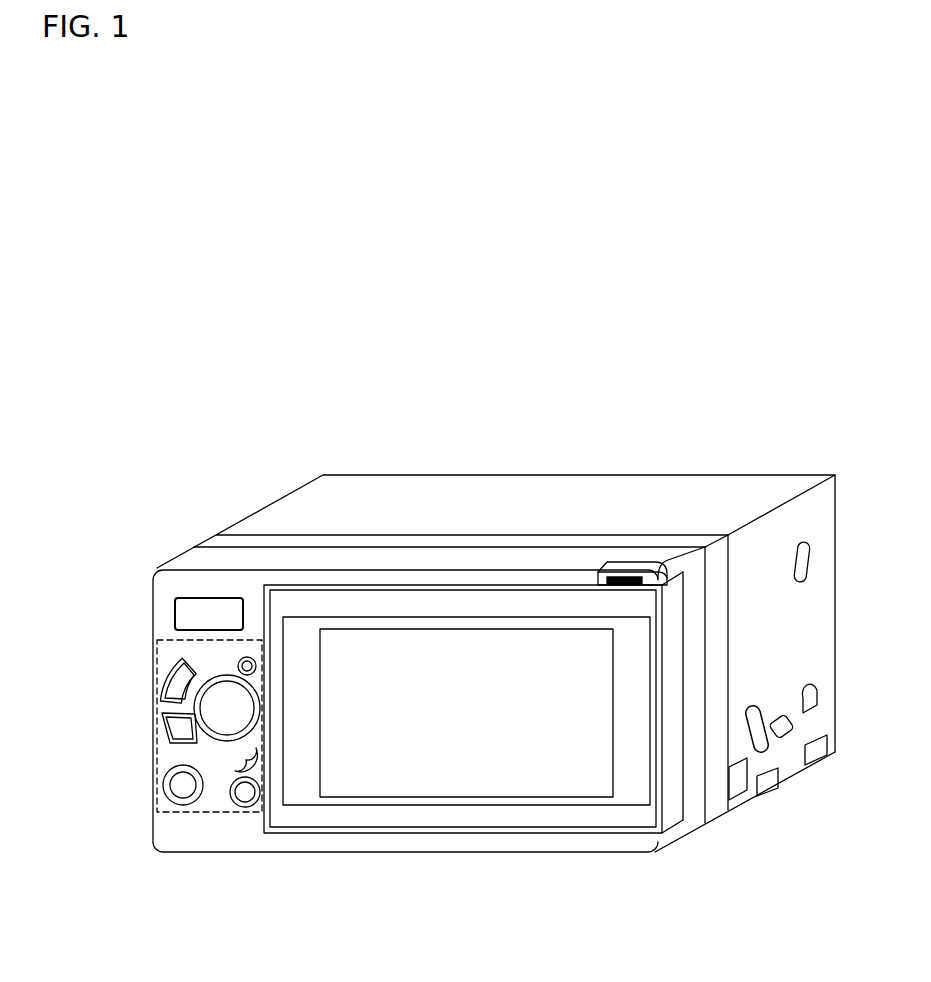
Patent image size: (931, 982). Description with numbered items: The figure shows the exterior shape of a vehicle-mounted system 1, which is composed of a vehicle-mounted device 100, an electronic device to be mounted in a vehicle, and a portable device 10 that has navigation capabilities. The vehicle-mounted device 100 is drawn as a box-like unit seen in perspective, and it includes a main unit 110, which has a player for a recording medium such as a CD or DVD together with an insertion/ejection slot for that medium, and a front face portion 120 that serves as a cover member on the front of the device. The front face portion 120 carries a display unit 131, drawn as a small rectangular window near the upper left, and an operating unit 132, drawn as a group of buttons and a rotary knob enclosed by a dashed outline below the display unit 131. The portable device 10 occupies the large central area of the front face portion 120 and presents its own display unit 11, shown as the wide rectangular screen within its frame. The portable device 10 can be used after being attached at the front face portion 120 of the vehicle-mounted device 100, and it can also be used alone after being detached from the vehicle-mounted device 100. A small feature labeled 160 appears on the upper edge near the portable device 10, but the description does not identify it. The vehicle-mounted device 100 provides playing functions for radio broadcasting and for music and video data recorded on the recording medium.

The vehicle-mounted system 1 is at (464, 366).
The portable device 10 is at (627, 825).
The display unit 11 is at (545, 780).
The vehicle-mounted device 100 is at (240, 468).
The main unit 110 is at (255, 523).
The front face portion 120 is at (188, 558).
The display unit 131 is at (188, 615).
The operating unit 132 is at (212, 813).
The handle 160 is at (632, 577).